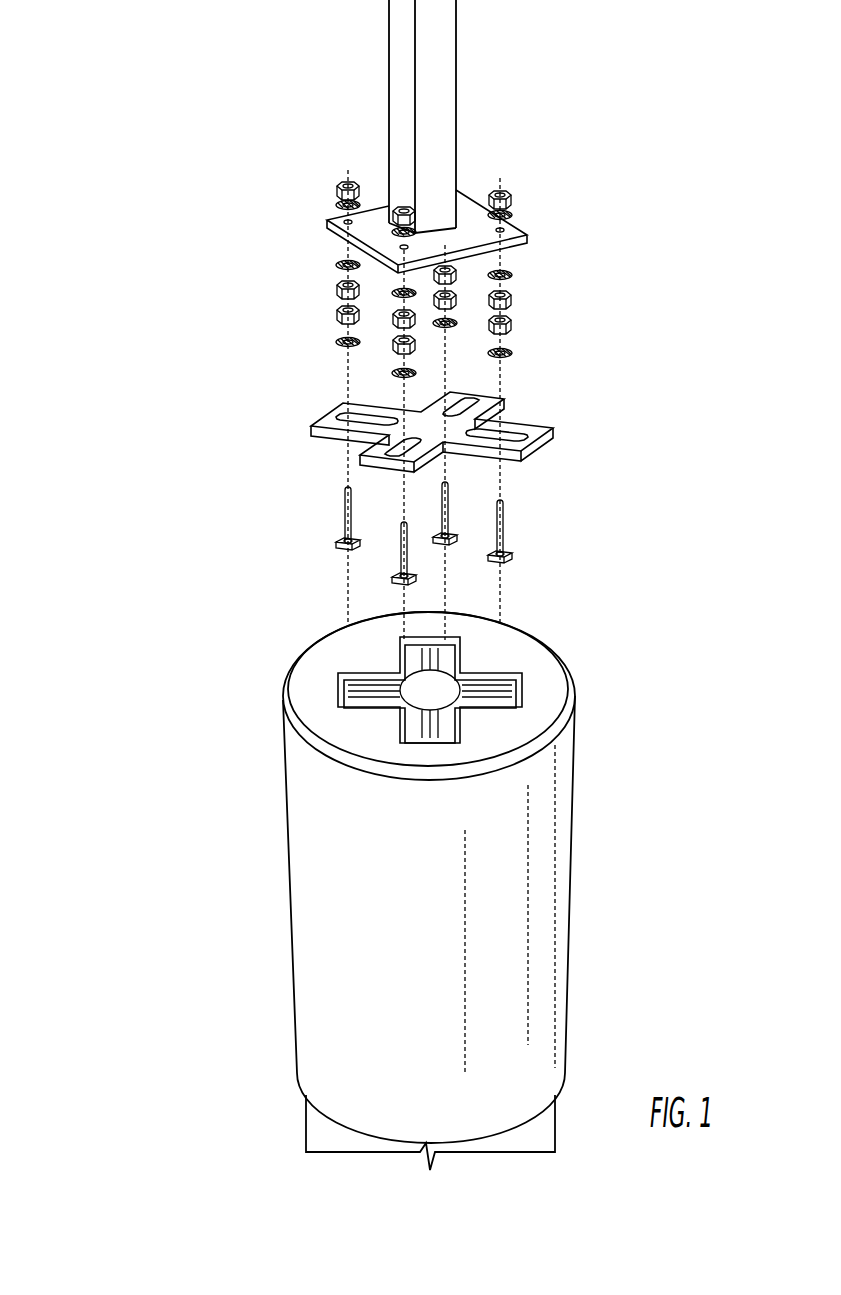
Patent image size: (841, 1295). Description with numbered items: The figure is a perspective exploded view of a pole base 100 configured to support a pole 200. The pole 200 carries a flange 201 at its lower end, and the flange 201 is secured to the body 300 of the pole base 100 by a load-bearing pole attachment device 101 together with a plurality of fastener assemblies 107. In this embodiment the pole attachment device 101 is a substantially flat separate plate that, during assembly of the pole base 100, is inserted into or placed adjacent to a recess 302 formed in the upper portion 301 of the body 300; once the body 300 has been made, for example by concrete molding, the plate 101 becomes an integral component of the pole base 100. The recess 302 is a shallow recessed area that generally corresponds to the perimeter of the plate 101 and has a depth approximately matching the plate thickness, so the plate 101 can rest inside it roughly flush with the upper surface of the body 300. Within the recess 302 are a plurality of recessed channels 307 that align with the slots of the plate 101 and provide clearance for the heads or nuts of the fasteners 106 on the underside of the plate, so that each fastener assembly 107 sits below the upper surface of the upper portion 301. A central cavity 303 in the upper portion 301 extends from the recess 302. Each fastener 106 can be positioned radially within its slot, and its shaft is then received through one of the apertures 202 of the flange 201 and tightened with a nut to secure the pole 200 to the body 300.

The pole base 100 is at (136, 503).
The pole attachment device 101 is at (540, 430).
The fastener 106 is at (508, 541).
The fastener assembly 107 is at (296, 302).
The pole 200 is at (447, 38).
The flange 201 is at (503, 229).
The aperture 202 is at (327, 222).
The body 300 is at (555, 900).
The upper portion 301 is at (551, 763).
The recess 302 is at (478, 668).
The central cavity 303 is at (418, 692).
The recessed channel 307 is at (415, 728).